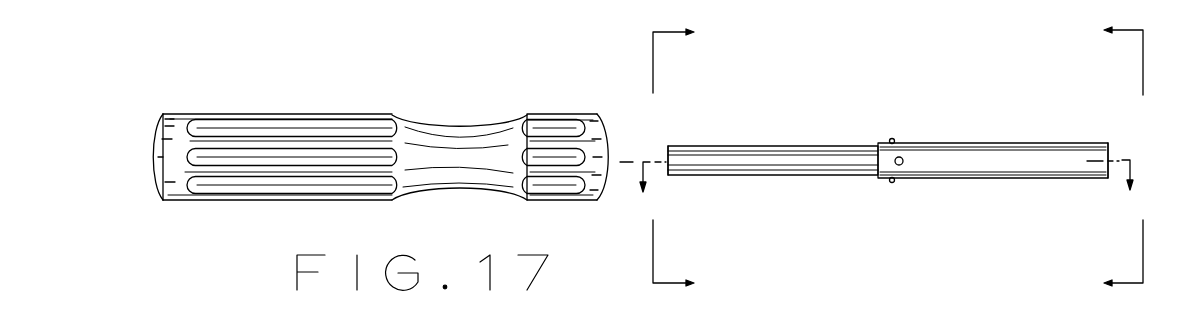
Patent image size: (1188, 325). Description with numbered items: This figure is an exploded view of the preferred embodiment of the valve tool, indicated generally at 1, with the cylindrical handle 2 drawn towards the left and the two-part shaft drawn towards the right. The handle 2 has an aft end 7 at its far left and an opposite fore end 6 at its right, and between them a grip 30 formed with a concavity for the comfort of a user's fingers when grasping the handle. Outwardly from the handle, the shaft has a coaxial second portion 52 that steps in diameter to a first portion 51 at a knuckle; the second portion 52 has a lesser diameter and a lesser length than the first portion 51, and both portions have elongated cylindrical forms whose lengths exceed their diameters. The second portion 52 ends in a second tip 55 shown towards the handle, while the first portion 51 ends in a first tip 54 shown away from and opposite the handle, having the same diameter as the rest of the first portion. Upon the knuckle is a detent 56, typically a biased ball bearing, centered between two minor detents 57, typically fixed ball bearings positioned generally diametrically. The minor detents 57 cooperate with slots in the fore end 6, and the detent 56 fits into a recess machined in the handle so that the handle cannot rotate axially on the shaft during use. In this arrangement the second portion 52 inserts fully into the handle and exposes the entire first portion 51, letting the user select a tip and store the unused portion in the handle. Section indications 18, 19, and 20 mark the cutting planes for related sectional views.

The handle assembly 1 is at (284, 97).
The handle 2 is at (370, 113).
The fore end 6 is at (606, 120).
The aft end 7 is at (150, 157).
The grip 30 is at (453, 125).
The section line 18 is at (1106, 156).
The section line 19 is at (690, 155).
The section line 20 is at (877, 189).
The first portion 51 is at (1024, 137).
The second portion 52 is at (831, 146).
The first tip 54 is at (1108, 143).
The second tip 55 is at (668, 147).
The detent 56 is at (903, 161).
The minor detents 57 is at (892, 138).